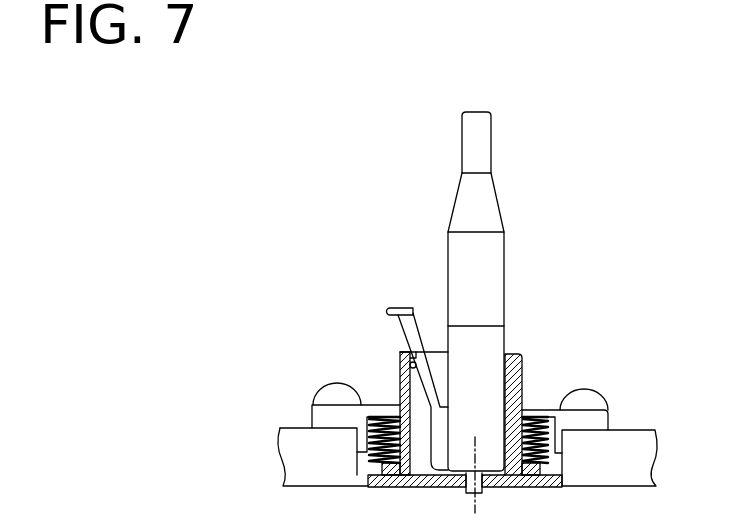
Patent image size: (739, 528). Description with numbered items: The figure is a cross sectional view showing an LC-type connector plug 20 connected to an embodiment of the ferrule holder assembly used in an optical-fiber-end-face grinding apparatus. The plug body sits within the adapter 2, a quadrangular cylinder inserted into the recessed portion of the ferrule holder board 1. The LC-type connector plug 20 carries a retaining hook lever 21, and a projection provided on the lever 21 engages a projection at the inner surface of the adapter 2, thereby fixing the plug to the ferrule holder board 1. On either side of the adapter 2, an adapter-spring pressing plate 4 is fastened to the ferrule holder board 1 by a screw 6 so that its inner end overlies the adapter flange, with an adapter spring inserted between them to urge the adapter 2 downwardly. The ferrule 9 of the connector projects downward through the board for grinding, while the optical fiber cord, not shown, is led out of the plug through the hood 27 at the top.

The ferrule holder board 1 is at (305, 442).
The adapter 2 is at (517, 353).
The adapter-spring pressing plate 4 is at (550, 408).
The screw 6 is at (588, 397).
The ferrule 9 is at (466, 493).
The LC-type connector plug 20 is at (558, 260).
The retaining hook lever 21 is at (410, 308).
The hood 27 is at (462, 207).